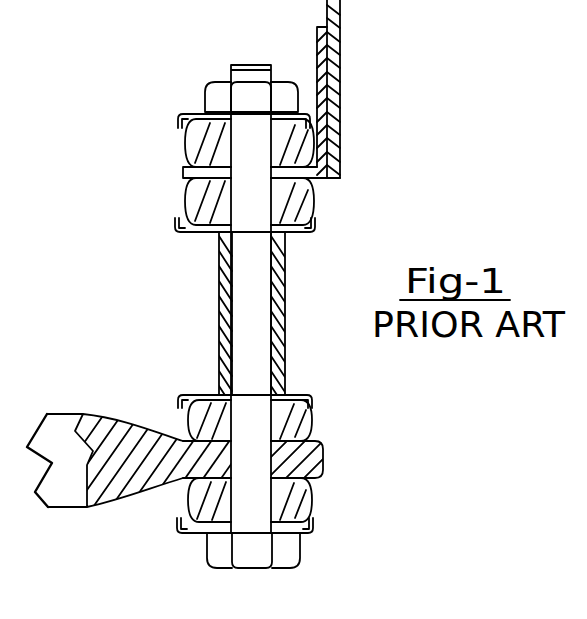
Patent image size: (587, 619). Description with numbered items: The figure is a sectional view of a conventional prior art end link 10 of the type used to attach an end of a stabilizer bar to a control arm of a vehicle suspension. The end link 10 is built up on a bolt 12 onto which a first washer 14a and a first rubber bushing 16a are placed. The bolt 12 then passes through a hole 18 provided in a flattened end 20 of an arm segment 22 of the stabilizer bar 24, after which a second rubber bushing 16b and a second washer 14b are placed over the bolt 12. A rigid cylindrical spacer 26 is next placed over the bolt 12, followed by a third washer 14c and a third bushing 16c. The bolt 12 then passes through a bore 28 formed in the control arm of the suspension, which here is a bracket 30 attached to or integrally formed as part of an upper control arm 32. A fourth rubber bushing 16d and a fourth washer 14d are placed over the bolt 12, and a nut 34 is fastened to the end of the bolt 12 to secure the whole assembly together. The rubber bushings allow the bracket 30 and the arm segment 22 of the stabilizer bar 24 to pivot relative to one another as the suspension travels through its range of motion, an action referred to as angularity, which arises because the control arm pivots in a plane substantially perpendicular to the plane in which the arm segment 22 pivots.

The end link 10 is at (133, 340).
The bolt 12 is at (257, 278).
The first washer 14a is at (302, 522).
The second washer 14b is at (302, 395).
The third washer 14c is at (310, 228).
The fourth washer 14d is at (183, 123).
The first rubber bushing 16a is at (303, 502).
The second rubber bushing 16b is at (303, 422).
The third bushing 16c is at (302, 202).
The fourth rubber bushing 16d is at (200, 146).
The hole 18 is at (290, 465).
The flattened end 20 is at (324, 474).
The arm segment 22 is at (68, 493).
The stabilizer bar 24 is at (122, 408).
The rigid cylindrical spacer 26 is at (283, 333).
The bore 28 is at (258, 175).
The bracket 30 is at (337, 110).
The upper control arm 32 is at (346, 50).
The nut 34 is at (220, 100).